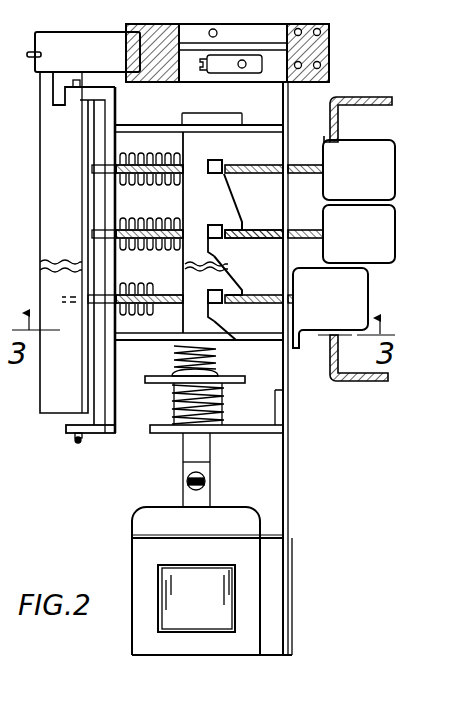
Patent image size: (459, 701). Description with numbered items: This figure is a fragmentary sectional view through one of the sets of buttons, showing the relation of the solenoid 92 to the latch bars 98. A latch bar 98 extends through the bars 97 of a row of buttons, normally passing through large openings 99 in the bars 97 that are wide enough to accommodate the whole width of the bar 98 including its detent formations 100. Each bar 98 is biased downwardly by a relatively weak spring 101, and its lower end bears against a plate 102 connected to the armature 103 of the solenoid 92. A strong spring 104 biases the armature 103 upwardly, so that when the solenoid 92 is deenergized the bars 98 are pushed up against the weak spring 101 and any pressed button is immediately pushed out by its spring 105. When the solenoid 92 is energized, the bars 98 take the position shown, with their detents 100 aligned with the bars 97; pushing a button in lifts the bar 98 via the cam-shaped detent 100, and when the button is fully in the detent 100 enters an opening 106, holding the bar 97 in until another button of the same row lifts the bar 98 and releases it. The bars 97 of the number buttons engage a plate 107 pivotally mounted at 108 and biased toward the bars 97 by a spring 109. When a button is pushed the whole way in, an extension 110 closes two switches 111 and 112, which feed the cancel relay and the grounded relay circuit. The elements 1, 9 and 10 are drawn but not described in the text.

The housing 1 is at (338, 312).
The terminal block 9 is at (366, 252).
The terminal block 10 is at (365, 188).
The solenoid 92 is at (203, 598).
The button bar 97 is at (314, 154).
The latch bar 98 is at (200, 278).
The large opening 99 is at (166, 304).
The detent formation 100 is at (228, 224).
The weak spring 101 is at (174, 352).
The plate 102 is at (234, 376).
The armature 103 is at (210, 491).
The strong spring 104 is at (174, 408).
The button spring 105 is at (168, 178).
The opening 106 is at (240, 223).
The plate 107 is at (75, 230).
The pivot 108 is at (80, 444).
The spring 109 is at (33, 50).
The extension 110 is at (100, 64).
The switch 111 is at (227, 33).
The switch 112 is at (258, 67).